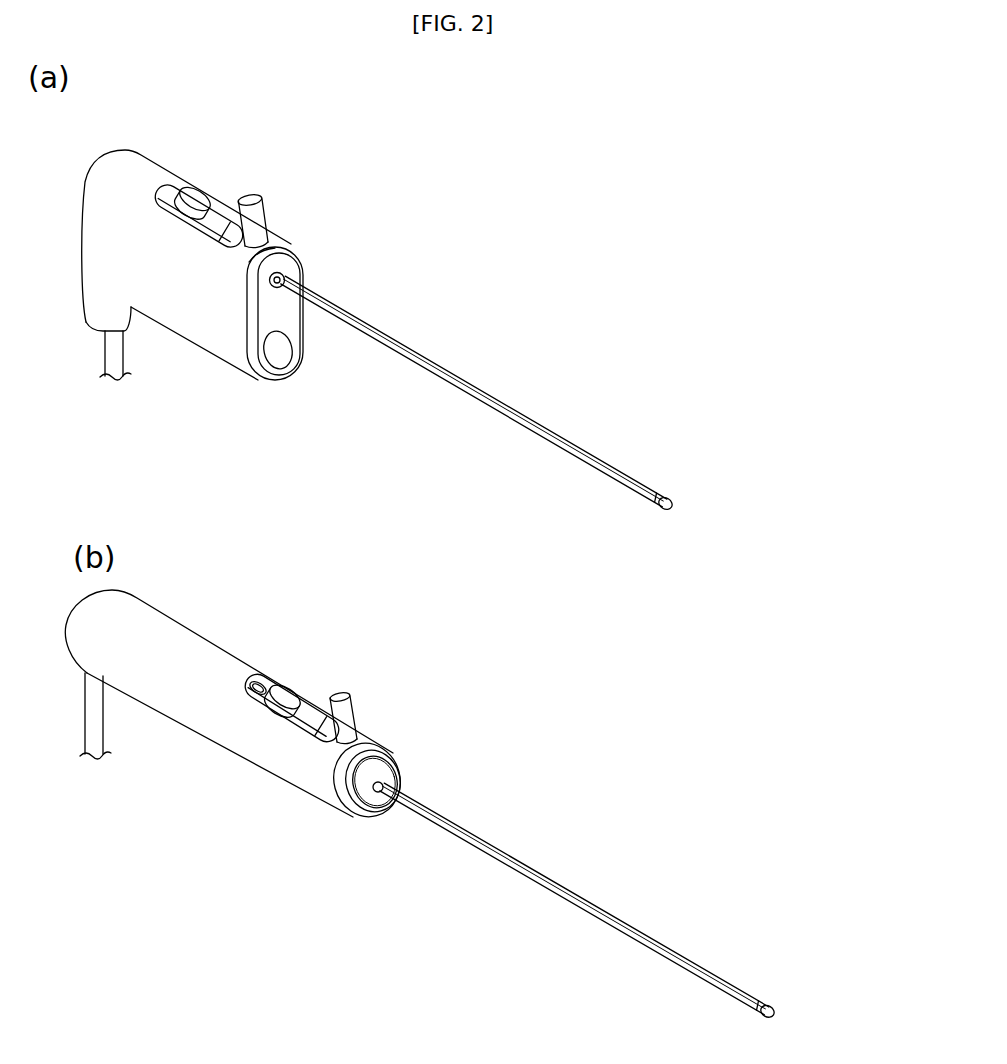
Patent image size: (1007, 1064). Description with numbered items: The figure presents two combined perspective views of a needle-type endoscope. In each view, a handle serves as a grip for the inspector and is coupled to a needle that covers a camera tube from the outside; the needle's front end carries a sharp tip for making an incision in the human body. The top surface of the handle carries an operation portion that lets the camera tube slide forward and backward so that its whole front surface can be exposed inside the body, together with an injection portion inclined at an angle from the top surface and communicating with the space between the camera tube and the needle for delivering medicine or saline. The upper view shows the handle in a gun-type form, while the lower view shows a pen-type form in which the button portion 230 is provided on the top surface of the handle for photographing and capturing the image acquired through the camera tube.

The button portion 230 is at (253, 679).